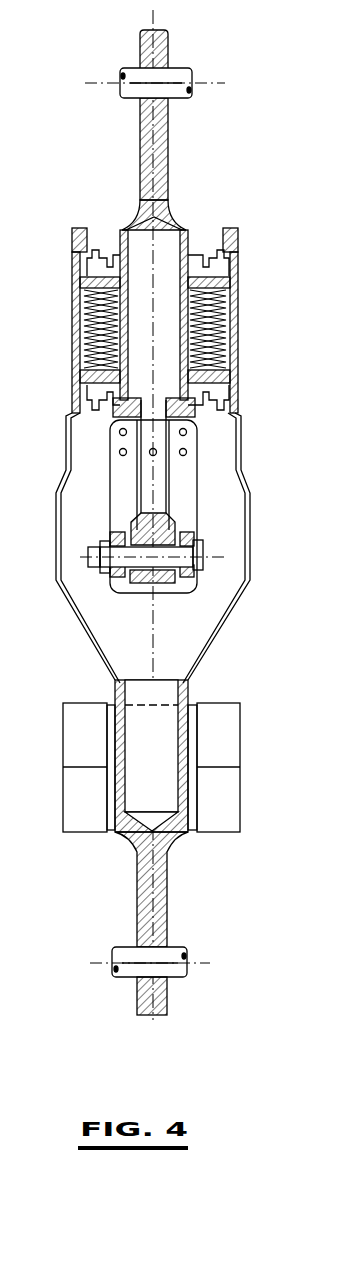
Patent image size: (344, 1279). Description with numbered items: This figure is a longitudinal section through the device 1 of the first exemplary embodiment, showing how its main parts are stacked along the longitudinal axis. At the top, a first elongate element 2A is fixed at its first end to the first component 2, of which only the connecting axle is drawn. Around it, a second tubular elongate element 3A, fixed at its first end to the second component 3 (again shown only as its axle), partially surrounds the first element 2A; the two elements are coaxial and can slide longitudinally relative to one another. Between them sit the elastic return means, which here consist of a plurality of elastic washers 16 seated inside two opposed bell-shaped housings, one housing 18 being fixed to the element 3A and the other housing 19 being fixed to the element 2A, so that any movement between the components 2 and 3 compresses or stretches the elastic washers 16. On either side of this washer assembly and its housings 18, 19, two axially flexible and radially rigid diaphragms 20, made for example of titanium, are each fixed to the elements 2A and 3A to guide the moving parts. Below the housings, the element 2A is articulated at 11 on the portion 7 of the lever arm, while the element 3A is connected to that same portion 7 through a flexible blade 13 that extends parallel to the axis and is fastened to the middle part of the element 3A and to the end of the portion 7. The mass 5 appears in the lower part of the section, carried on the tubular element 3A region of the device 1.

The device 1 is at (195, 190).
The first component 2 is at (124, 72).
The first elongate element 2A is at (136, 176).
The second component 3 is at (118, 955).
The second tubular elongate element 3A is at (172, 861).
The mass 5 is at (72, 722).
The portion of the lever arm 7 is at (110, 536).
The articulation 11 is at (140, 585).
The flexible blade 13 is at (117, 460).
The elastic washers 16 is at (232, 322).
The bell-shaped housing 18 is at (222, 284).
The bell-shaped housing 19 is at (230, 373).
The diaphragms 20 is at (97, 250).